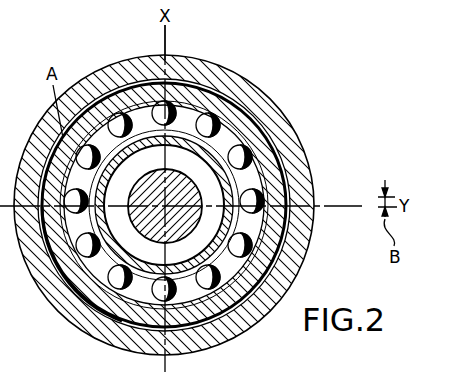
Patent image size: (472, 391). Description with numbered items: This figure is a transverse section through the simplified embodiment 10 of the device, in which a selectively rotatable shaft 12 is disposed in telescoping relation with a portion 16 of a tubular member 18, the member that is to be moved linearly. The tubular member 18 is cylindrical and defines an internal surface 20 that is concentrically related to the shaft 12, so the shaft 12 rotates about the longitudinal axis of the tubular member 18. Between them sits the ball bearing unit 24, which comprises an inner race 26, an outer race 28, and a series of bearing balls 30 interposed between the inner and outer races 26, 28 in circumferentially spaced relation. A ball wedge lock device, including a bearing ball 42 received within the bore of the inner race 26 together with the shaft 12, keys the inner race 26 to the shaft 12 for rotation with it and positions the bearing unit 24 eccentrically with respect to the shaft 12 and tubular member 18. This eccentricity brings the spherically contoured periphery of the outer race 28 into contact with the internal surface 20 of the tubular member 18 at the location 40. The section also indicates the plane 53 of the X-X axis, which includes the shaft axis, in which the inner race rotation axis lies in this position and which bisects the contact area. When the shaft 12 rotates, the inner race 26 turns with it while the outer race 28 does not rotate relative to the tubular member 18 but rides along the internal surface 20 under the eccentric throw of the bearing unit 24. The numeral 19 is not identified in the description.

The simplified embodiment of the invention 10 is at (0, 60).
The shaft 12 is at (198, 183).
The portion of tubular member 16 is at (304, 172).
The tubular member 18 is at (296, 134).
The flange 19 is at (301, 383).
The internal surface 20 is at (277, 268).
The ball bearing unit 24 is at (92, 301).
The inner race 26 is at (282, 229).
The outer race 28 is at (254, 300).
The bearing balls 30 is at (252, 150).
The contact location 40 is at (53, 150).
The bearing ball 42 is at (80, 142).
The plane 53 is at (166, 35).